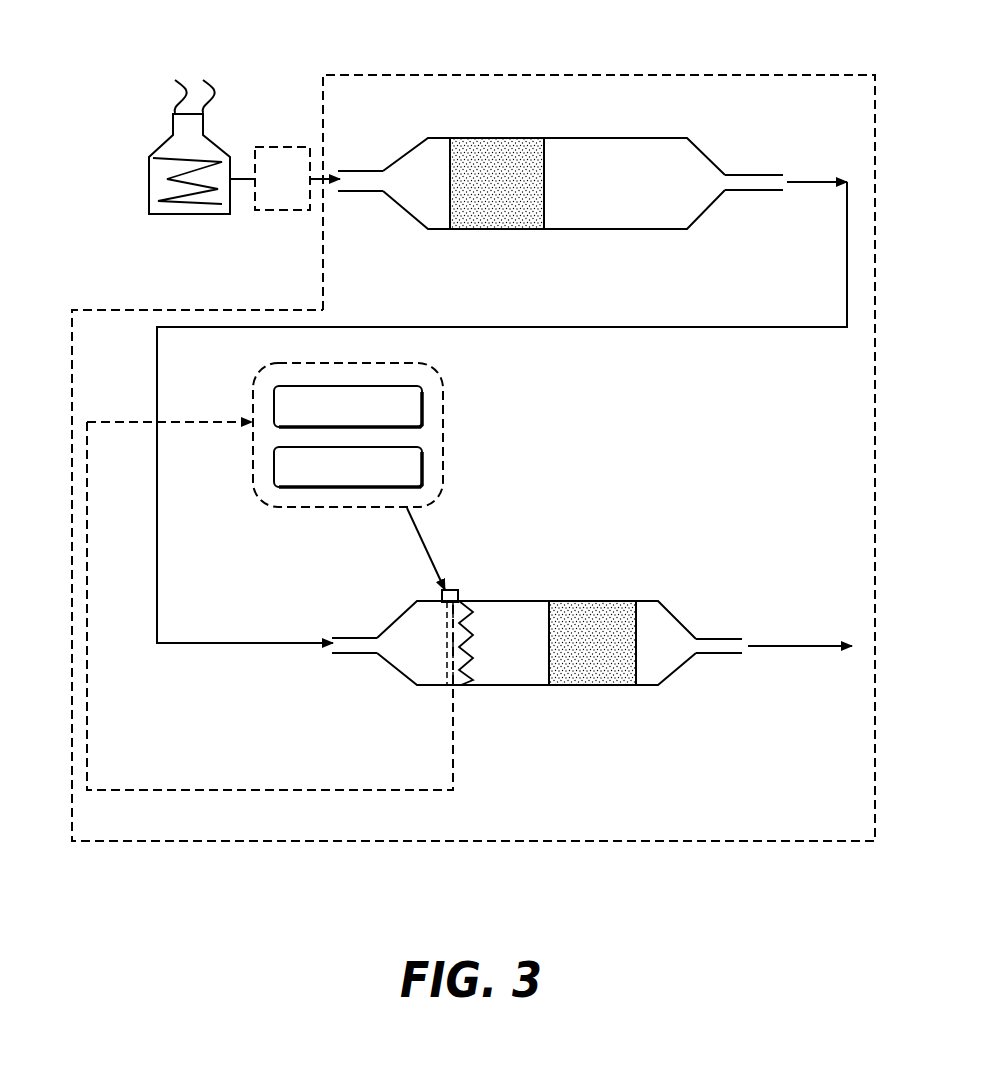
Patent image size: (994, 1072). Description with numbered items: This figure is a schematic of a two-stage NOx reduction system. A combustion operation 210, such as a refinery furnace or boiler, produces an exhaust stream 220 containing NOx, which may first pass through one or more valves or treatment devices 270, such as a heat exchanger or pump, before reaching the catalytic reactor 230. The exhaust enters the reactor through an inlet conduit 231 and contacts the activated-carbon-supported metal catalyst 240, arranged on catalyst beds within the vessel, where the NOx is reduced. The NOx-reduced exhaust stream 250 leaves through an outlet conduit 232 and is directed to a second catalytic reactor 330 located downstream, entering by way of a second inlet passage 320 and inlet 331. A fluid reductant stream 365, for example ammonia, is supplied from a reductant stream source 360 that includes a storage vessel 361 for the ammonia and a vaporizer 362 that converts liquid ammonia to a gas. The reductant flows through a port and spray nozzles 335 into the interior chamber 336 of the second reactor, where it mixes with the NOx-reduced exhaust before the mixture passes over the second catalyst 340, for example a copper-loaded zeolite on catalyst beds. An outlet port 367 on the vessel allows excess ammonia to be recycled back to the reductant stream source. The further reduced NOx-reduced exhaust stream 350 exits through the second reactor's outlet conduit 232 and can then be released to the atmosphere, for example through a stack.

The combustion operation 210 is at (149, 205).
The exhaust stream 220 is at (327, 183).
The catalytic reactor 230 is at (541, 182).
The conduit 231 is at (360, 180).
The outlet conduit 232 is at (740, 178).
The activated-carbon-supported metal catalyst 240 is at (502, 212).
The NOx-reduced exhaust stream 250 is at (813, 184).
The valves or treatment devices 270 is at (270, 212).
The exhaust passage 320 is at (313, 647).
The second catalytic reactor 330 is at (521, 671).
The inlet 331 is at (347, 638).
The spray nozzles 335 is at (467, 680).
The interior chamber 336 is at (510, 668).
The second catalyst 340 is at (613, 676).
The further reduced NOx-reduced exhaust stream 350 is at (793, 647).
The reductant stream source 360 is at (406, 431).
The storage vessel 361 is at (422, 413).
The vaporizer 362 is at (422, 472).
The fluid reductant stream 365 is at (435, 563).
The outlet port 367 is at (402, 790).